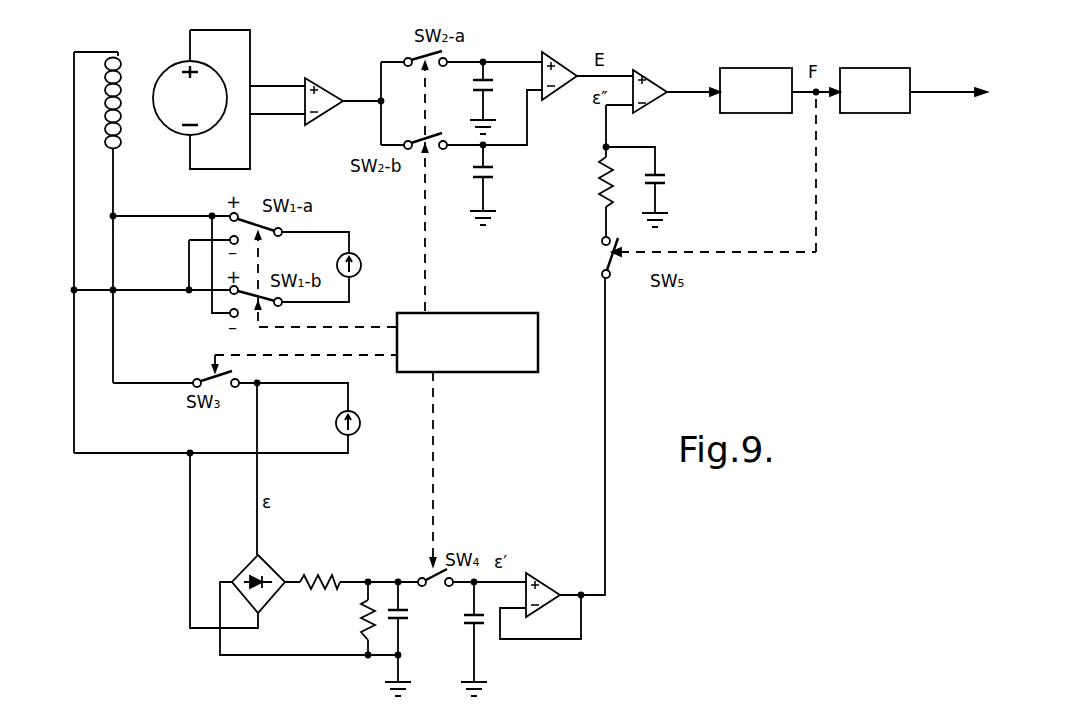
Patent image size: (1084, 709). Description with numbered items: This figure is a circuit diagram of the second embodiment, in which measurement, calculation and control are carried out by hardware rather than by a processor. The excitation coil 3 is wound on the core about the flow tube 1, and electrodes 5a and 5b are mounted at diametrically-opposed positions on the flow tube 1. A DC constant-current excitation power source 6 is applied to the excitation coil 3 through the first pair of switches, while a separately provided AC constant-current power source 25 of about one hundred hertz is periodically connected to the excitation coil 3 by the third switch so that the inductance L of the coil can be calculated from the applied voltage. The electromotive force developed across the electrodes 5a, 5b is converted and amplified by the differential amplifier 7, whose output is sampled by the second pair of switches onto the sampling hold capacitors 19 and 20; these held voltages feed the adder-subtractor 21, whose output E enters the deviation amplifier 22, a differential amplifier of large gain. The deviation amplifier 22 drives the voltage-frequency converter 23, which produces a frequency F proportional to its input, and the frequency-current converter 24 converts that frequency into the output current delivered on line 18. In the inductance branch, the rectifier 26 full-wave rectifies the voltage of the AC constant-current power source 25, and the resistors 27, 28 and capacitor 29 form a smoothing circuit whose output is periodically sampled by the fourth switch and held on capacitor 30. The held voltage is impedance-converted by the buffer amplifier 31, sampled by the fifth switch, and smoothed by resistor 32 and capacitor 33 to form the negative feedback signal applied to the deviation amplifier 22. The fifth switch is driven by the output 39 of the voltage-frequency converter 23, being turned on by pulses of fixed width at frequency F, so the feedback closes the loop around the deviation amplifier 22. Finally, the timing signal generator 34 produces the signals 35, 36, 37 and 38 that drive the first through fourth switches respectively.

The excitation coil 3 is at (118, 72).
The flow tube 1 is at (208, 78).
The electrode 5a is at (180, 89).
The electrode 5b is at (200, 114).
The differential amplifier 7 is at (322, 78).
The sampling hold capacitor 19 is at (472, 86).
The sampling hold capacitor 20 is at (496, 178).
The adder-subtractor 21 is at (559, 64).
The deviation amplifier 22 is at (654, 72).
The voltage-frequency converter 23 is at (750, 68).
The frequency-current converter 24 is at (874, 68).
The output line 18 is at (938, 90).
The DC constant-current excitation power source 6 is at (360, 262).
The AC constant-current power source 25 is at (336, 423).
The rectifier 26 is at (274, 570).
The resistor 27 is at (330, 576).
The resistor 28 is at (360, 620).
The capacitor 29 is at (410, 614).
The capacitor 30 is at (466, 624).
The buffer amplifier 31 is at (550, 586).
The resistor 32 is at (600, 196).
The capacitor 33 is at (666, 174).
The timing signal generator 34 is at (538, 352).
The timing signal 35 is at (368, 326).
The timing signal 36 is at (425, 275).
The timing signal 37 is at (374, 386).
The timing signal 38 is at (433, 478).
The output of voltage-frequency converter 39 is at (743, 250).